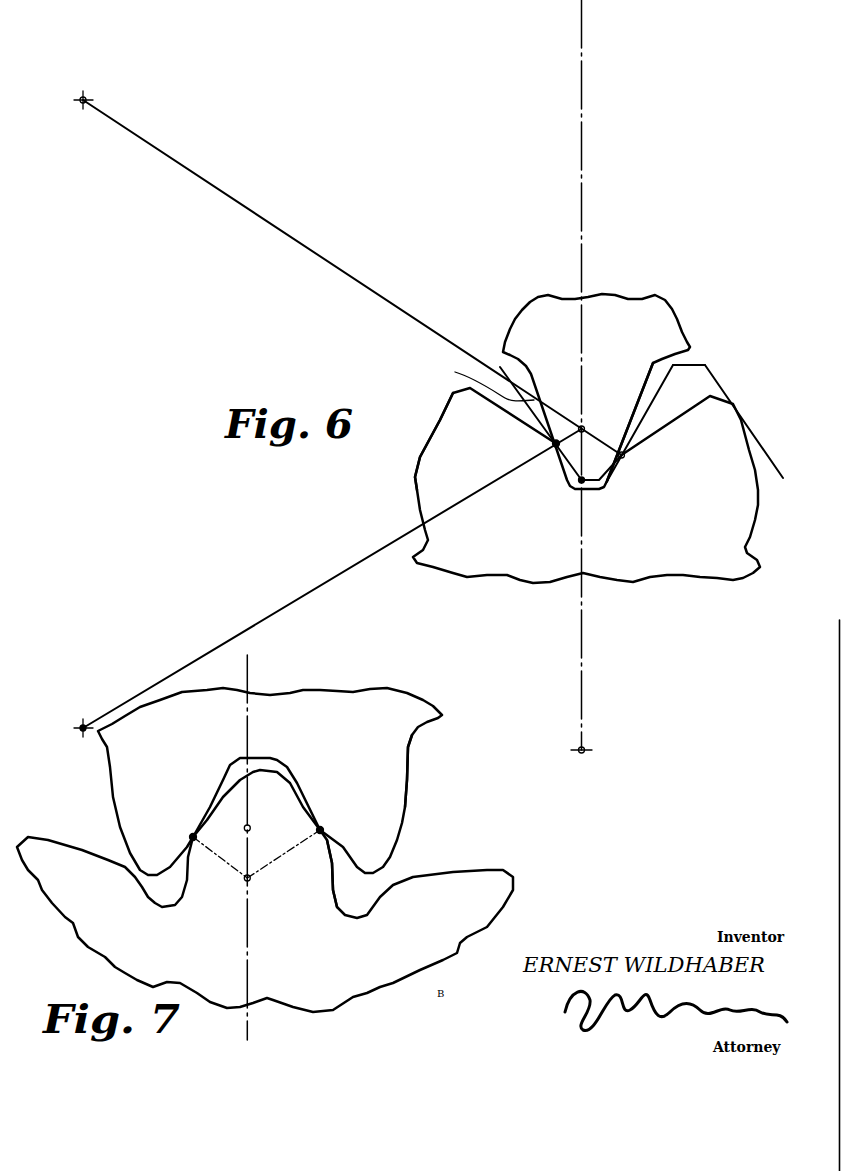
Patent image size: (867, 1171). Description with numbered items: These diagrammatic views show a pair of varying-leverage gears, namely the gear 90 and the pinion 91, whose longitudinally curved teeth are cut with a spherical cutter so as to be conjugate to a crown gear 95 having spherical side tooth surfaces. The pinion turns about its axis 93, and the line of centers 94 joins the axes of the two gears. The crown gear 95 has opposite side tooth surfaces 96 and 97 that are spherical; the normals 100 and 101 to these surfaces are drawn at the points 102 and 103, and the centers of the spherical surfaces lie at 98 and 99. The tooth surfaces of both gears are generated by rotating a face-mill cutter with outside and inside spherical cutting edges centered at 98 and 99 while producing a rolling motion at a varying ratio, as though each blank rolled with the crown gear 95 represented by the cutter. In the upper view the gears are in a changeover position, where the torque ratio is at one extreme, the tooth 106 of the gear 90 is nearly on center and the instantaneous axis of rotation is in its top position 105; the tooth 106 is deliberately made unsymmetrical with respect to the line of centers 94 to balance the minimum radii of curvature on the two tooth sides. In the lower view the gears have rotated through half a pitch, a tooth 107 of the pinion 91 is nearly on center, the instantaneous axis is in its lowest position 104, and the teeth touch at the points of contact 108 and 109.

In FIG. 6, the gear 90 is at (648, 300).
In FIG. 7, the gear 90 is at (347, 700).
In FIG. 6, the pinion 91 is at (682, 565).
In FIG. 7, the pinion 91 is at (367, 982).
In FIG. 6, the axis of the pinion 93 is at (587, 750).
In FIG. 6, the line of centers 94 is at (582, 202).
In FIG. 7, the line of centers 94 is at (250, 683).
In FIG. 6, the crown gear 95 is at (690, 363).
In FIG. 6, the side tooth surface of the crown gear 96 is at (658, 388).
In FIG. 6, the side tooth surface of the crown gear 97 is at (500, 367).
In FIG. 6, the center of spherical surface 98 is at (83, 105).
In FIG. 6, the center of spherical surface 99 is at (83, 723).
In FIG. 6, the normal to tooth surface 100 is at (357, 279).
In FIG. 6, the normal to tooth surface 101 is at (297, 599).
In FIG. 6, the point on tooth surface 102 is at (624, 457).
In FIG. 6, the point on tooth surface 103 is at (556, 443).
In FIG. 6, the lowest position of instantaneous axis 104 is at (582, 480).
In FIG. 7, the lowest position of instantaneous axis 104 is at (247, 878).
In FIG. 6, the top position of instantaneous axis 105 is at (584, 427).
In FIG. 7, the top position of instantaneous axis 105 is at (250, 828).
In FIG. 6, the tooth of the gear 106 is at (643, 374).
In FIG. 7, the tooth of the gear 106 is at (405, 752).
In FIG. 6, the tooth of the pinion 107 is at (423, 490).
In FIG. 7, the tooth of the pinion 107 is at (322, 887).
In FIG. 7, the point of contact 108 is at (320, 830).
In FIG. 7, the point of contact 109 is at (193, 837).